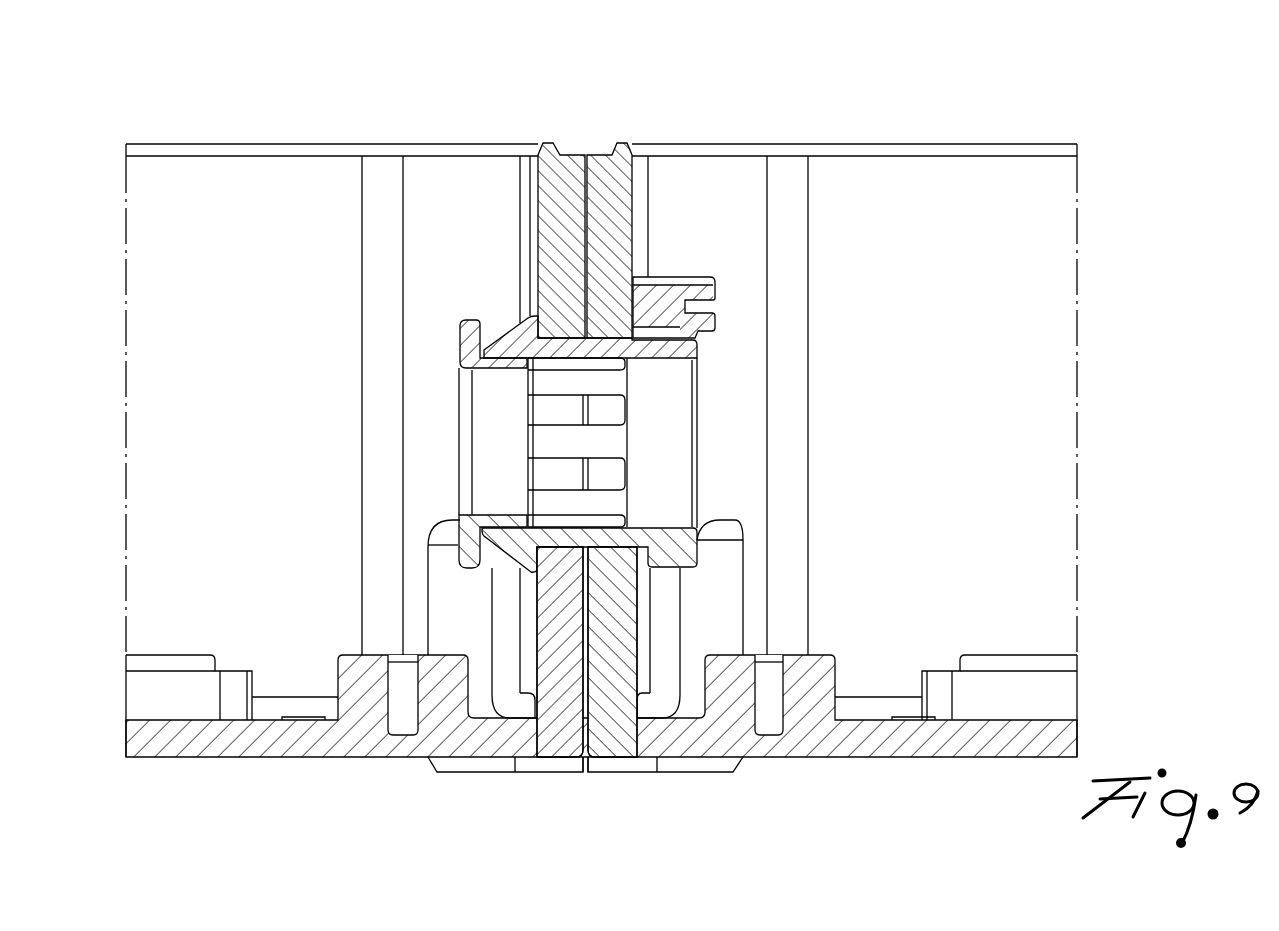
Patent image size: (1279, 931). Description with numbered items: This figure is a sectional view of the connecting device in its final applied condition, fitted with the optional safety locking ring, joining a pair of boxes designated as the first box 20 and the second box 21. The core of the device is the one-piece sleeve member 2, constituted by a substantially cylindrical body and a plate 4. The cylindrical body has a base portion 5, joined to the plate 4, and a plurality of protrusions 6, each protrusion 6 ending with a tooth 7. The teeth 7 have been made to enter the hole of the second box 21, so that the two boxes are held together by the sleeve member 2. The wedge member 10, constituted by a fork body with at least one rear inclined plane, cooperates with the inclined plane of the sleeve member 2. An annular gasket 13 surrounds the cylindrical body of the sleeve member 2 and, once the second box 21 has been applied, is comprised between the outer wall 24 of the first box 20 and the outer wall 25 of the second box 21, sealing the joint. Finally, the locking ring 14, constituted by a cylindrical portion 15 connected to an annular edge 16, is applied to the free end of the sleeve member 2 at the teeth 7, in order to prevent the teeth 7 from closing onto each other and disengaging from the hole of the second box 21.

The sleeve member 2 is at (709, 483).
The plate 4 is at (703, 347).
The base portion 5 is at (665, 352).
The protrusion 6 is at (612, 340).
The tooth 7 is at (513, 337).
The wedge member 10 is at (681, 283).
The annular gasket 13 is at (582, 307).
The locking ring 14 is at (455, 347).
The cylindrical portion 15 is at (500, 372).
The annular edge 16 is at (468, 332).
The first box 20 is at (989, 141).
The second box 21 is at (376, 142).
The outer wall of the first box 24 is at (612, 660).
The outer wall of the second box 25 is at (560, 655).